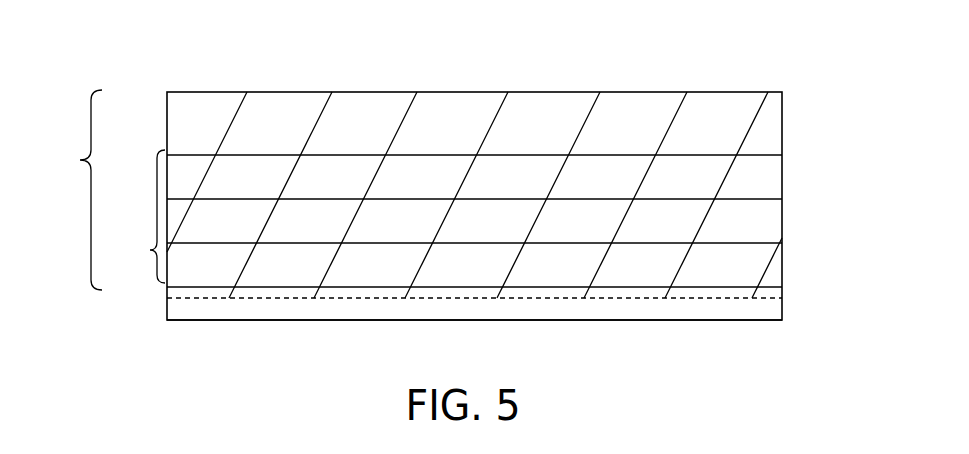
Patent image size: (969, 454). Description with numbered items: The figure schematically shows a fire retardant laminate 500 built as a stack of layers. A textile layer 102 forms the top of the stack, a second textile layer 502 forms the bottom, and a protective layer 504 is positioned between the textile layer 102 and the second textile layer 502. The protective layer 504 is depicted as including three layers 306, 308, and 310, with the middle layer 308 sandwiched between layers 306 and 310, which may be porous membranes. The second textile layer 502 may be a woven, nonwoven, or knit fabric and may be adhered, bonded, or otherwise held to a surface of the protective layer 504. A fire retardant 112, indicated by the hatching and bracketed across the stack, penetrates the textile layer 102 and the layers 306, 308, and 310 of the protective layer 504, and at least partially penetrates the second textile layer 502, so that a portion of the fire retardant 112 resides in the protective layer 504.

The fire retardant laminate 500 is at (215, 71).
The textile layer 102 is at (783, 125).
The layer 306 is at (783, 185).
The layer 308 is at (783, 240).
The layer 310 is at (783, 283).
The second textile layer 502 is at (783, 307).
The fire retardant 112 is at (68, 190).
The protective layer 504 is at (134, 216).